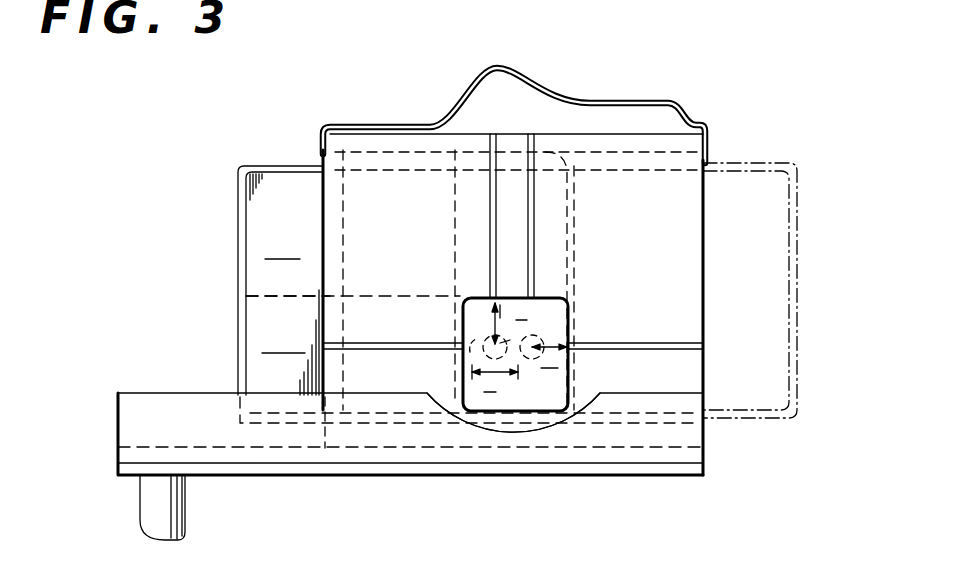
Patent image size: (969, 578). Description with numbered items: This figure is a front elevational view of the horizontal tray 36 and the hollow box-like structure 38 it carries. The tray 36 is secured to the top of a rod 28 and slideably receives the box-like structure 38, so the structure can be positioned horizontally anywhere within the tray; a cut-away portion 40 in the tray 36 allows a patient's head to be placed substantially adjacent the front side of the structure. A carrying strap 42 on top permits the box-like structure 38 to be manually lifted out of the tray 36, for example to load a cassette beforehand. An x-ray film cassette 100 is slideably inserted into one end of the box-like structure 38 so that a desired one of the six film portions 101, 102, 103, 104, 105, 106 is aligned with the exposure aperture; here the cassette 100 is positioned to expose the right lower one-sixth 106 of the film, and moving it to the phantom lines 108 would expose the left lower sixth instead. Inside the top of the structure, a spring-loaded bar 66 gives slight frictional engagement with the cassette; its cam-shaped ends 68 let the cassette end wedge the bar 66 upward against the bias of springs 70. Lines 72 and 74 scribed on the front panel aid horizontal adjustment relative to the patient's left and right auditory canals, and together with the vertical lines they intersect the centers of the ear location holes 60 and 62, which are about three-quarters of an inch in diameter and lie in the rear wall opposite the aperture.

The rod 28 is at (186, 513).
The horizontal tray 36 is at (150, 400).
The hollow box-like structure 38 is at (716, 131).
The cut-away portion 40 is at (600, 390).
The carrying strap 42 is at (533, 82).
The ear location hole 60 is at (458, 360).
The ear location hole 62 is at (549, 336).
The spring-loaded bar 66 is at (564, 110).
The cam-shaped ends 68 is at (366, 138).
The springs 70 is at (442, 150).
The scribed line 72 is at (490, 212).
The scribed line 74 is at (534, 243).
The x-ray film cassette 100 is at (281, 165).
The portion of the x-ray film 101 is at (290, 247).
The portion of the x-ray film 102 is at (370, 210).
The portion of the x-ray film 103 is at (563, 211).
The portion of the x-ray film 104 is at (287, 340).
The portion of the x-ray film 105 is at (408, 316).
The right lower one-sixth of the x-ray film 106 is at (567, 302).
The phantom lines 108 is at (797, 187).